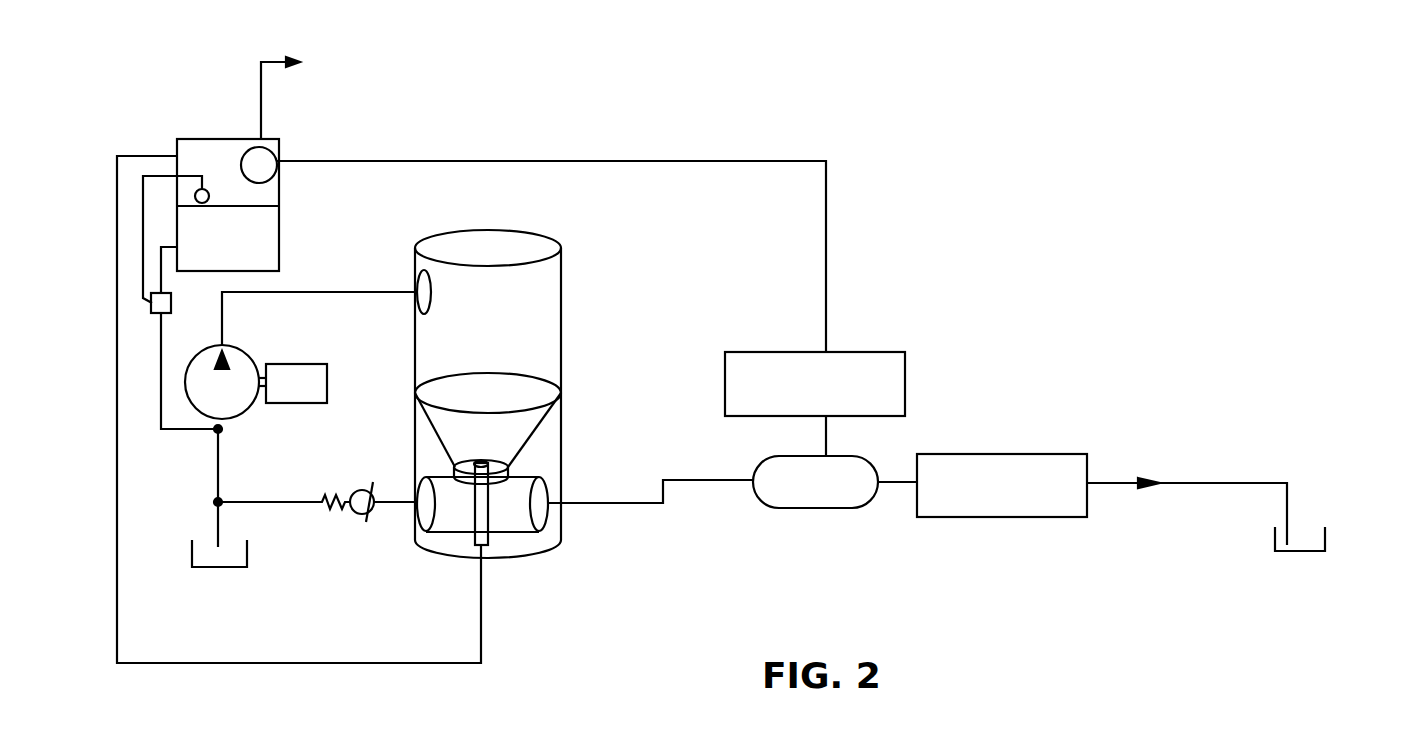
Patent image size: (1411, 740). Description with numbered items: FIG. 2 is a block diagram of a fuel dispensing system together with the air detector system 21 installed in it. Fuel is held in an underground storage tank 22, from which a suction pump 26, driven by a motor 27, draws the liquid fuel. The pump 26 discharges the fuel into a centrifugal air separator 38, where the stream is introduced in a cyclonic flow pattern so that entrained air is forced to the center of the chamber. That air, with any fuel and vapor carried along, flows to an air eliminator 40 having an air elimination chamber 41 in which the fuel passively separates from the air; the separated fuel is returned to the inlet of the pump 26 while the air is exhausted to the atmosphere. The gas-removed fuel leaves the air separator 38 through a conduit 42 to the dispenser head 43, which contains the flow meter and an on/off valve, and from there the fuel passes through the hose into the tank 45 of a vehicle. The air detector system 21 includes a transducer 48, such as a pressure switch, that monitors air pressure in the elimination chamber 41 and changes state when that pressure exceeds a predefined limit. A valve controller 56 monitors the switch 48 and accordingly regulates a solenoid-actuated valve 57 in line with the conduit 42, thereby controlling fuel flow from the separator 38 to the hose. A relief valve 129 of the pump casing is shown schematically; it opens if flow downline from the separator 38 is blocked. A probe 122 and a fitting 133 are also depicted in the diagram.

The air detector system 21 is at (845, 130).
The underground storage tank 22 is at (247, 556).
The suction pump 26 is at (243, 352).
The motor 27 is at (327, 385).
The centrifugal air separator 38 is at (533, 320).
The air eliminator 40 is at (185, 225).
The air elimination chamber 41 is at (198, 139).
The conduit 42 is at (617, 503).
The dispenser head 43 is at (1063, 454).
The vehicle tank 45 is at (1325, 540).
The transducer 48 is at (278, 155).
The valve controller 56 is at (905, 380).
The solenoid-actuated valve 57 is at (837, 500).
The level probe 122 is at (485, 510).
The relief valve 129 is at (383, 474).
The junction fitting 133 is at (143, 303).